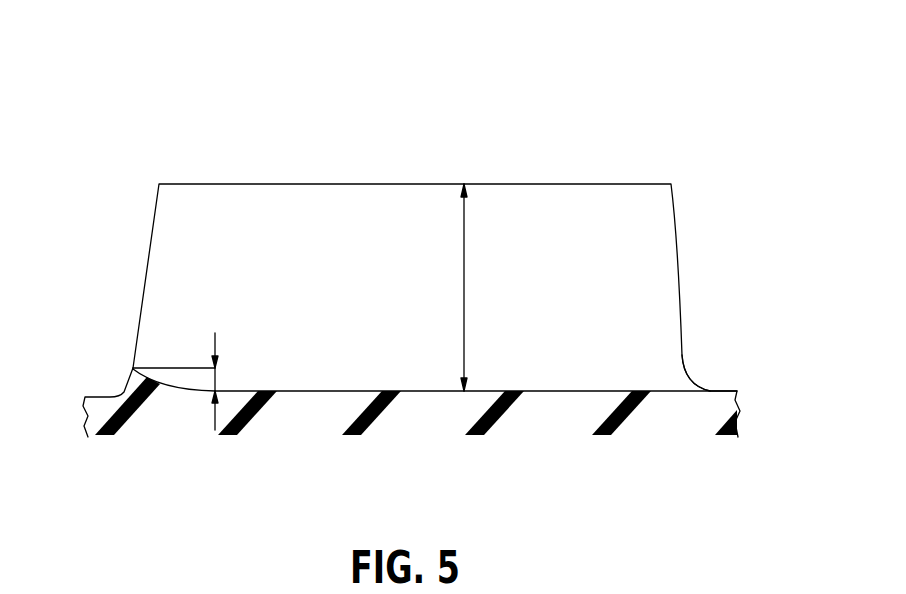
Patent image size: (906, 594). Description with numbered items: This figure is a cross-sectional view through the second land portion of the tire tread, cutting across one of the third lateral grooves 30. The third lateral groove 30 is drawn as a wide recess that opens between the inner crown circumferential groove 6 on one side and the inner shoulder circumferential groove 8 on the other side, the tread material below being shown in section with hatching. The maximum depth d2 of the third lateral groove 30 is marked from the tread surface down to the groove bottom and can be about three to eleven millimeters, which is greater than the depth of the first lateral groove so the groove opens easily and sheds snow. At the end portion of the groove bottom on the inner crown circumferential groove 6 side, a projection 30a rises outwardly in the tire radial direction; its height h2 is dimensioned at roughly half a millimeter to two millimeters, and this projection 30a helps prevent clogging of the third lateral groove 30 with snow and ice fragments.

The inner crown circumferential groove 6 is at (102, 370).
The inner shoulder circumferential groove 8 is at (718, 365).
The third lateral groove 30 is at (385, 184).
The projection 30a is at (167, 362).
The height of the projection h2 is at (220, 382).
The maximum depth of the third lateral groove d2 is at (464, 264).